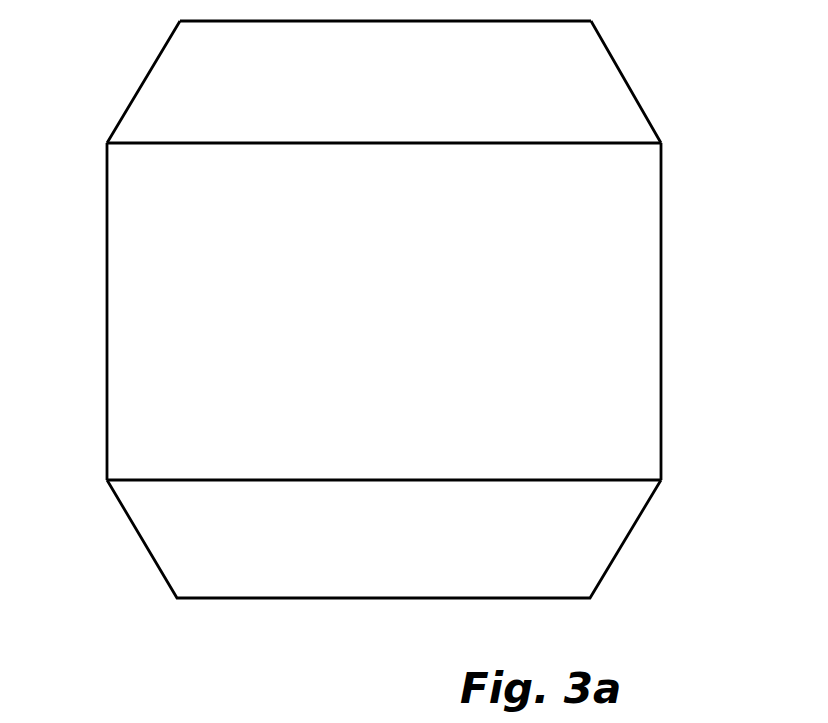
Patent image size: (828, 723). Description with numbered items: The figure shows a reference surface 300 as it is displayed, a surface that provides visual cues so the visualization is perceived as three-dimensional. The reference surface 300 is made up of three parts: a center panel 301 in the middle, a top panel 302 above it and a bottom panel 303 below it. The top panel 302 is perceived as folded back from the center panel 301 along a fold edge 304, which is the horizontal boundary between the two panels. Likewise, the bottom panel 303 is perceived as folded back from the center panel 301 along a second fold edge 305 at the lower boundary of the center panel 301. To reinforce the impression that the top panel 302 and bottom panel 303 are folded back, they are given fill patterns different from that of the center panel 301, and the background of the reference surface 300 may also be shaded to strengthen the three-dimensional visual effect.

The reference surface 300 is at (380, 322).
The center panel 301 is at (647, 294).
The top panel 302 is at (600, 72).
The bottom panel 303 is at (263, 582).
The fold edge 304 is at (663, 144).
The fold edge 305 is at (663, 481).